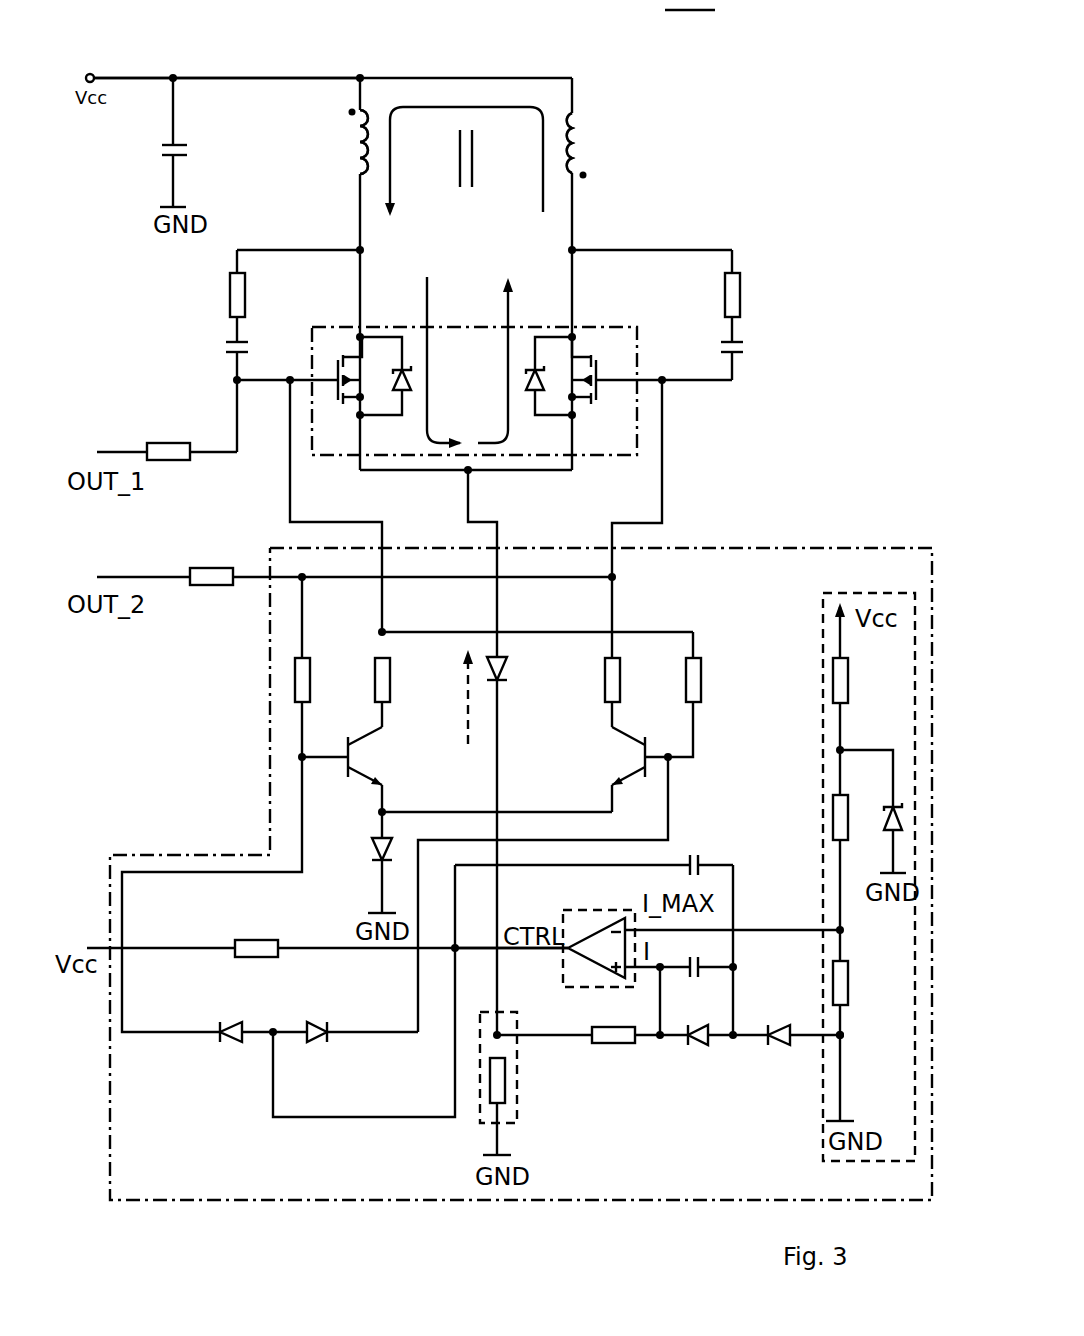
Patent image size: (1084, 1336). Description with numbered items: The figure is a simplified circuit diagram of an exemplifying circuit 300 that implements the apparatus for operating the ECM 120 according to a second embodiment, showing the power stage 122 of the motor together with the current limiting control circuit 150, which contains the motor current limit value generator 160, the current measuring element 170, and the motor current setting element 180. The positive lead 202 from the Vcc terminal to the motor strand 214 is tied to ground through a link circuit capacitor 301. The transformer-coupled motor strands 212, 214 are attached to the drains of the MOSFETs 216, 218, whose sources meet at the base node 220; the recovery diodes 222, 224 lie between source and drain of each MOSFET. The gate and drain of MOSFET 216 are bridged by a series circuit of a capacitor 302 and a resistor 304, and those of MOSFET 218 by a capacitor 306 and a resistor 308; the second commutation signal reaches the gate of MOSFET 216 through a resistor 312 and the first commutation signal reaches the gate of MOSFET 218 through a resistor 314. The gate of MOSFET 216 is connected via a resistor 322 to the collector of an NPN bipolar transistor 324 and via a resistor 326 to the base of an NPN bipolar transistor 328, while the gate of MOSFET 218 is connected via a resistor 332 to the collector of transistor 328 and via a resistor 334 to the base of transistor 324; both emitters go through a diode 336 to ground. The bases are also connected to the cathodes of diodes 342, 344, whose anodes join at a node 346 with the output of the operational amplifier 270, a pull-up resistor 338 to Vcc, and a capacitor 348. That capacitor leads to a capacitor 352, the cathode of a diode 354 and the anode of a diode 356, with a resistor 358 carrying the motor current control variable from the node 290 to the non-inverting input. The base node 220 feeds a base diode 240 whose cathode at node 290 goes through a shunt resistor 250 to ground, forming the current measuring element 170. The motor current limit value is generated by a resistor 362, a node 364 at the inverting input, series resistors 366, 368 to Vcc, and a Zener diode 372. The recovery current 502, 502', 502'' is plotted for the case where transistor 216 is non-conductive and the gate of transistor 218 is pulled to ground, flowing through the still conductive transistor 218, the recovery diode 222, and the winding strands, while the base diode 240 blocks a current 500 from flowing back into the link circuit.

The ECM 120 is at (604, 98).
The power stage 122 is at (448, 352).
The control circuit 150 is at (768, 548).
The motor current limit value generator 160 is at (823, 670).
The current measuring element 170 is at (517, 1105).
The motor current setting element 180 is at (582, 908).
The positive lead 202 is at (243, 78).
The motor strand 212 is at (580, 150).
The motor strand 214 is at (352, 143).
The MOSFET 216 is at (610, 362).
The MOSFET 218 is at (323, 358).
The base node 220 is at (480, 476).
The recovery diode 222 is at (545, 378).
The recovery diode 224 is at (398, 362).
The base diode 240 is at (512, 670).
The shunt resistor 250 is at (505, 1075).
The operational amplifier 270 is at (572, 965).
The node 290 is at (506, 1027).
The exemplifying circuit 300 is at (690, 5).
The link circuit capacitor 301 is at (175, 128).
The capacitor 302 is at (748, 345).
The resistor 304 is at (740, 286).
The capacitor 306 is at (226, 335).
The resistor 308 is at (230, 306).
The resistor 312 is at (207, 585).
The resistor 314 is at (170, 460).
The resistor 322 is at (620, 688).
The NPN bipolar transistor 324 is at (585, 764).
The resistor 326 is at (295, 677).
The NPN bipolar transistor 328 is at (400, 763).
The resistor 332 is at (375, 680).
The resistor 334 is at (700, 686).
The diode 336 is at (378, 848).
The pull-up resistor 338 is at (268, 940).
The diode 342 is at (318, 1045).
The diode 344 is at (222, 1045).
The node 346 is at (453, 950).
The capacitor 348 is at (706, 860).
The capacitor 352 is at (700, 980).
The diode 354 is at (772, 1045).
The diode 356 is at (695, 1045).
The resistor 358 is at (610, 1043).
The resistor 362 is at (847, 993).
The node 364 is at (842, 932).
The resistor 366 is at (833, 825).
The resistor 368 is at (848, 686).
The Zener diode 372 is at (885, 818).
The current 500 is at (462, 692).
The recovery current 502 is at (464, 124).
The recovery current 502' is at (421, 339).
The recovery current 502'' is at (482, 337).